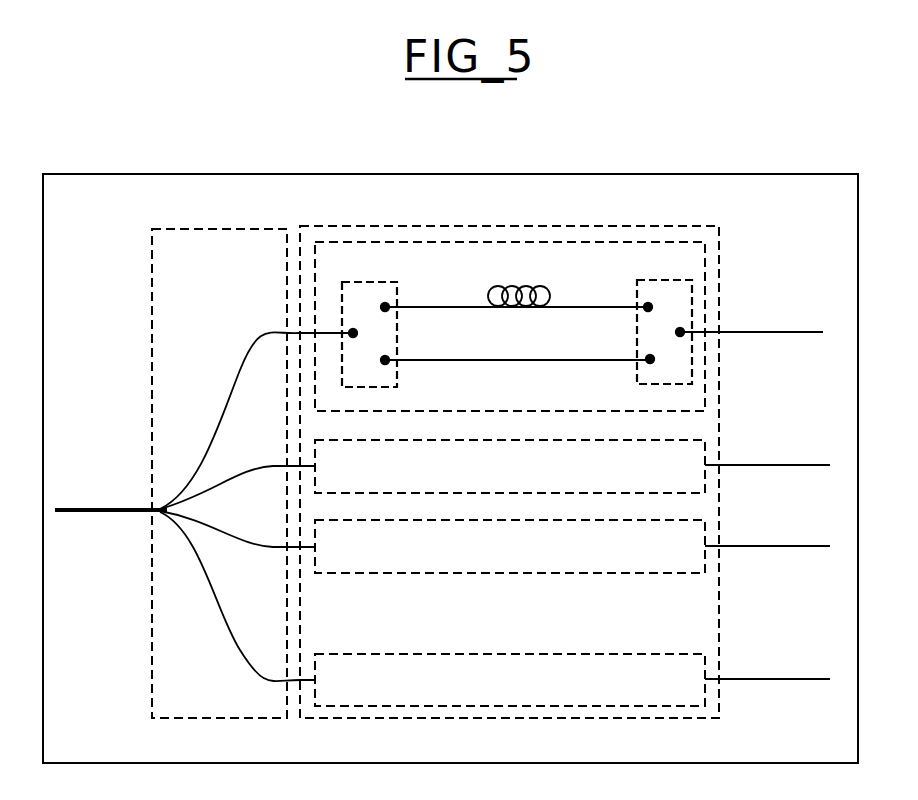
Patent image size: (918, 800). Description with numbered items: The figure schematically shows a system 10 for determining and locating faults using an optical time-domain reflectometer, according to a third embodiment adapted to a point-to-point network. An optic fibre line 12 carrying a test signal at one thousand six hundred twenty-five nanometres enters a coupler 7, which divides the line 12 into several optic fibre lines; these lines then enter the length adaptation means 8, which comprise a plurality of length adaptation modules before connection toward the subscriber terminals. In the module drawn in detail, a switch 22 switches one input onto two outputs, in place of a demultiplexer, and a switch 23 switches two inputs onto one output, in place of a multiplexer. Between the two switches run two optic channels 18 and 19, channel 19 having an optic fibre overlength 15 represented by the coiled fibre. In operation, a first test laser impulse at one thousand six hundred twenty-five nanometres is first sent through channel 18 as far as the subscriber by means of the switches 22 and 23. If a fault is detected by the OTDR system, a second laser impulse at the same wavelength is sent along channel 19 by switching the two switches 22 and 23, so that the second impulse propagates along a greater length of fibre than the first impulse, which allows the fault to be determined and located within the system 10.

The coupler 7 is at (148, 390).
The length adaptation means 8 is at (704, 224).
The system 10 is at (815, 246).
The optic fibre line 12 is at (107, 516).
The optic fibre overlength 15 is at (521, 286).
The optic channel 18 is at (437, 361).
The optic channel 19 is at (433, 306).
The switch 22 is at (365, 283).
The switch 23 is at (658, 280).